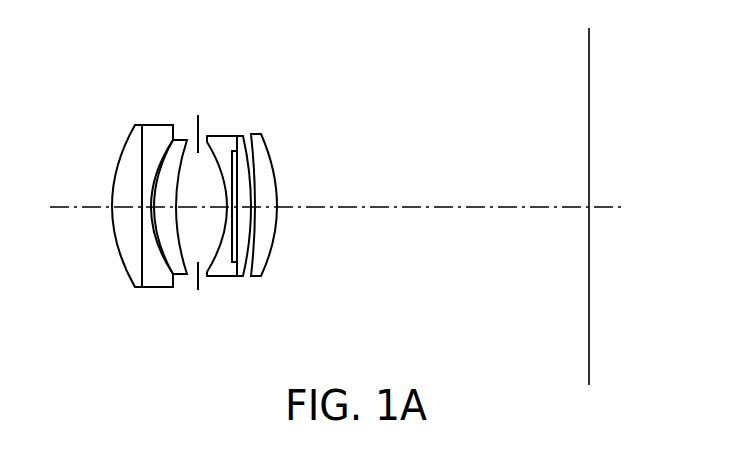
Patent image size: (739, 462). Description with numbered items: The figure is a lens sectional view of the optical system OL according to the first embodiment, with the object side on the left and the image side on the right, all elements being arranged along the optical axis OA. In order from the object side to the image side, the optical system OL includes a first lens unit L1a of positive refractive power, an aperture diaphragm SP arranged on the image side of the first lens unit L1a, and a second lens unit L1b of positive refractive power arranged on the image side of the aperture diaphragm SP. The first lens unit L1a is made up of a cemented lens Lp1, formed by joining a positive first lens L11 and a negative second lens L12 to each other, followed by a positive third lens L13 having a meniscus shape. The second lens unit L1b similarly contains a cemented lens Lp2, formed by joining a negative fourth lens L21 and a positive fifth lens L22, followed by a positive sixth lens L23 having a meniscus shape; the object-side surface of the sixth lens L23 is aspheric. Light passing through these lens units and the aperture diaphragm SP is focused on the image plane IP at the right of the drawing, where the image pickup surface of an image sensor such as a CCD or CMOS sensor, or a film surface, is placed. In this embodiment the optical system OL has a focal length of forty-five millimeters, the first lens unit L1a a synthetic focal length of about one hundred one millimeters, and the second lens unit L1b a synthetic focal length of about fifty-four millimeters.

The optical system OL is at (285, 33).
The first lens unit L1a is at (195, 82).
The second lens unit L1b is at (285, 82).
The cemented lens Lp1 is at (178, 122).
The cemented lens Lp2 is at (245, 122).
The positive first lens L11 is at (130, 278).
The negative second lens L12 is at (162, 287).
The positive third lens L13 is at (175, 270).
The aperture diaphragm SP is at (197, 283).
The negative fourth lens L21 is at (222, 267).
The positive fifth lens L22 is at (243, 260).
The positive sixth lens L23 is at (265, 236).
The optical axis OA is at (337, 165).
The image plane IP is at (616, 206).